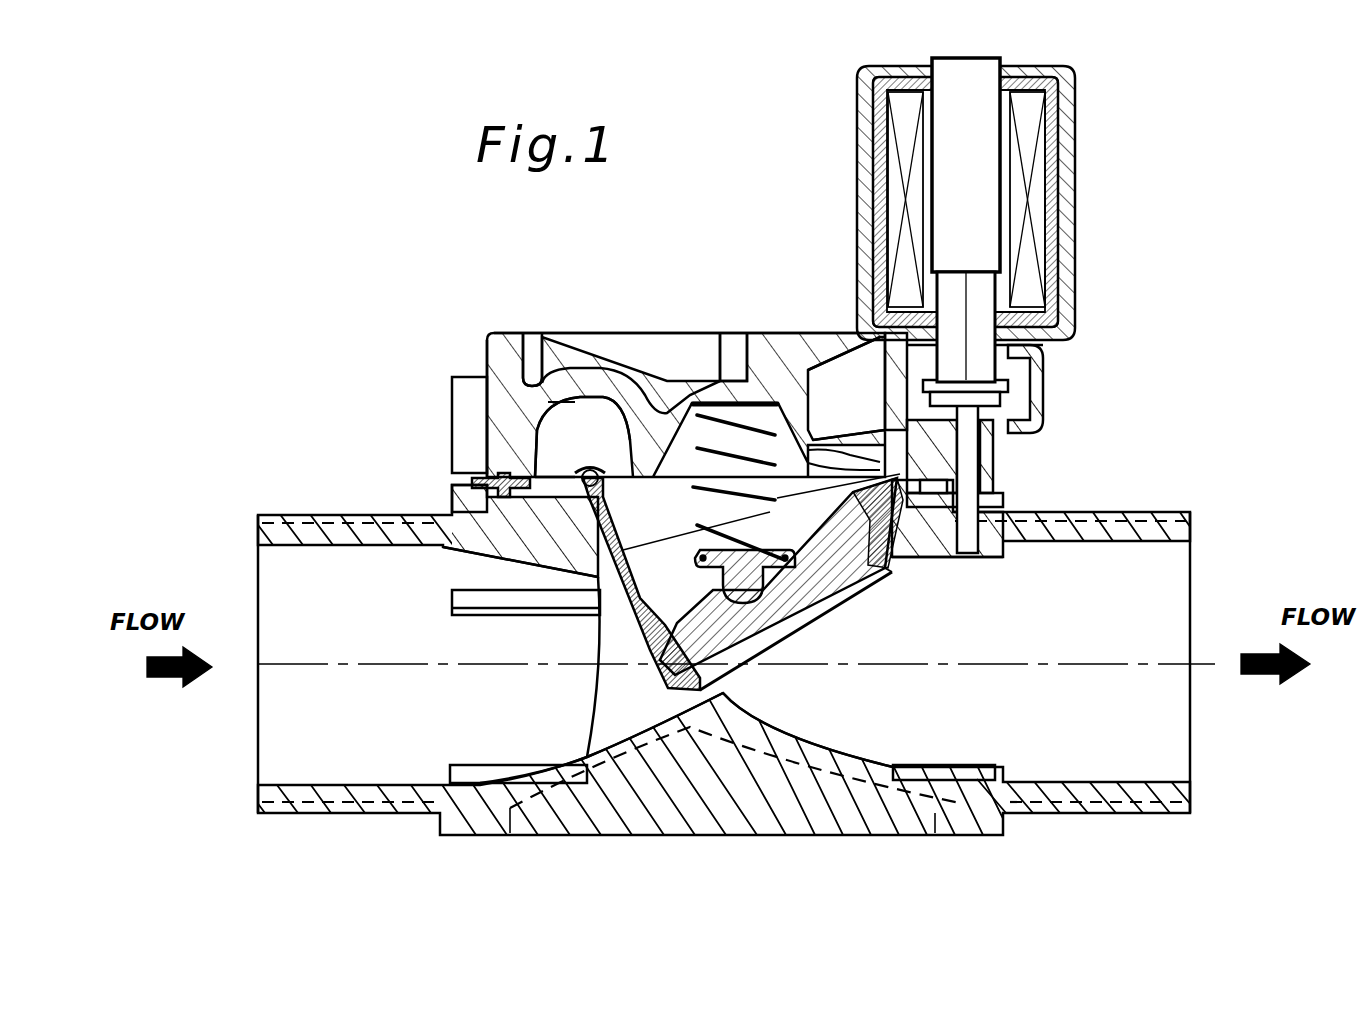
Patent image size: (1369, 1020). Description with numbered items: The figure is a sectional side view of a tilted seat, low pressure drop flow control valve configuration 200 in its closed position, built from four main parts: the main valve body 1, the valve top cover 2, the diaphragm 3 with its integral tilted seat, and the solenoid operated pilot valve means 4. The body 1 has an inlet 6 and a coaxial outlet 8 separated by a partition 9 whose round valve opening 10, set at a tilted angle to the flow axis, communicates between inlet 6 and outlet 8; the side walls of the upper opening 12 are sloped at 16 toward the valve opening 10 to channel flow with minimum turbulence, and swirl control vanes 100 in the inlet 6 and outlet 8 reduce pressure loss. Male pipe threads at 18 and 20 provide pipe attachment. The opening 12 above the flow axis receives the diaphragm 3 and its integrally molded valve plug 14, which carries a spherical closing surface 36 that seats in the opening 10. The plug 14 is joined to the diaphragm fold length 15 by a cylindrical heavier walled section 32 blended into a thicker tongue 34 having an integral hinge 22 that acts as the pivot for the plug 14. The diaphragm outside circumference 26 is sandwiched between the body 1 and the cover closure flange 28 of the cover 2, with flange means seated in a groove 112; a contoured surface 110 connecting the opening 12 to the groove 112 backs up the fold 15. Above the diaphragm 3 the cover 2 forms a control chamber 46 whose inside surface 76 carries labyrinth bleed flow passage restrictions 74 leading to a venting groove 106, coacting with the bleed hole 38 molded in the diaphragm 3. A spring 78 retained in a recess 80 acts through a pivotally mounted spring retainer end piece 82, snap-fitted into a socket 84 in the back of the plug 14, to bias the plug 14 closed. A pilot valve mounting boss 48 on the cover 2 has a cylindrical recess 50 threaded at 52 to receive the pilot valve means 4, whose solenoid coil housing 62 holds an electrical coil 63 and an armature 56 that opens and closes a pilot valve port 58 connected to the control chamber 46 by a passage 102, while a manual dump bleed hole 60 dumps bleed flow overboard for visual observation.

The main valve body 1 is at (300, 512).
The valve top cover 2 is at (493, 332).
The diaphragm 3 is at (470, 484).
The solenoid operated pilot valve means 4 is at (1075, 191).
The inlet 6 is at (318, 652).
The outlet 8 is at (1100, 652).
The partition 9 is at (712, 693).
The valve opening 10 is at (697, 687).
The opening 12 is at (933, 558).
The tilted seat valve plug 14 is at (783, 607).
The diaphragm fold length 15 is at (548, 470).
The sloped side walls 16 is at (640, 692).
The inlet attachment threads 18 is at (395, 812).
The outlet attachment threads 20 is at (1060, 811).
The integral hinge 22 is at (957, 553).
The diaphragm outside circumference 26 is at (452, 508).
The cover closure flange 28 is at (512, 333).
The cylindrical heavier walled section 32 is at (600, 638).
The tongue 34 is at (813, 475).
The spherical closing surface 36 is at (690, 725).
The bleed hole 38 is at (590, 478).
The control chamber 46 is at (655, 395).
The pilot valve mounting boss 48 is at (1050, 351).
The cylindrical recess 50 is at (1040, 359).
The threads 52 is at (1010, 398).
The armature 56 is at (973, 317).
The pilot valve port 58 is at (990, 450).
The manual dump bleed hole 60 is at (1002, 415).
The solenoid coil housing 62 is at (1063, 116).
The electrical coil 63 is at (1045, 76).
The labyrinth bleed flow passage restrictions 74 is at (570, 400).
The inside surface 76 is at (596, 368).
The spring 78 is at (735, 460).
The recess 80 is at (745, 355).
The spring retainer end piece 82 is at (761, 517).
The socket 84 is at (720, 588).
The swirl control vanes 100 is at (512, 600).
The passage 102 is at (870, 410).
The venting groove 106 is at (530, 400).
The surface 110 is at (530, 473).
The groove 112 is at (590, 515).
The flow control valve configuration 200 is at (474, 333).